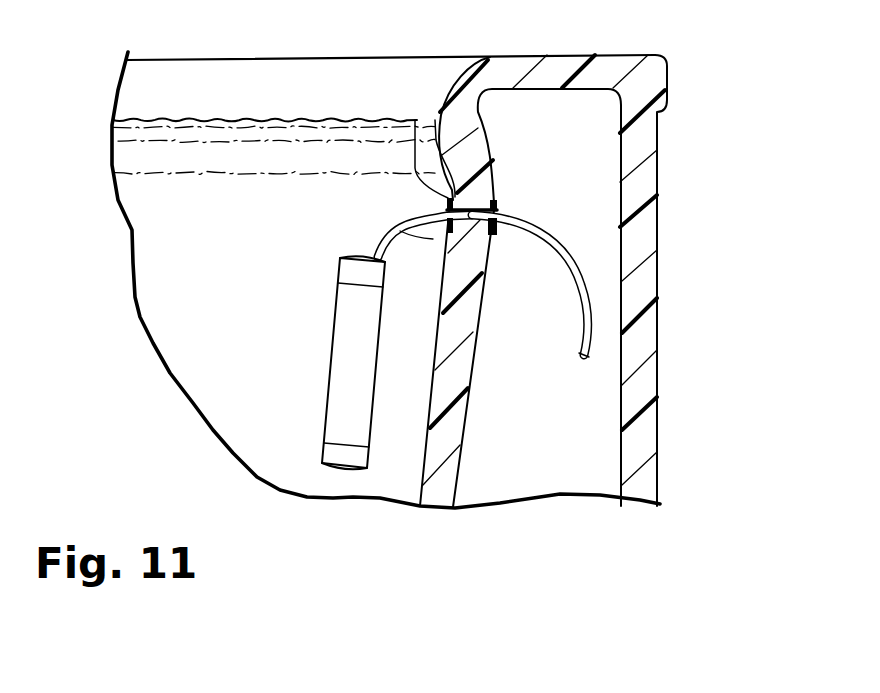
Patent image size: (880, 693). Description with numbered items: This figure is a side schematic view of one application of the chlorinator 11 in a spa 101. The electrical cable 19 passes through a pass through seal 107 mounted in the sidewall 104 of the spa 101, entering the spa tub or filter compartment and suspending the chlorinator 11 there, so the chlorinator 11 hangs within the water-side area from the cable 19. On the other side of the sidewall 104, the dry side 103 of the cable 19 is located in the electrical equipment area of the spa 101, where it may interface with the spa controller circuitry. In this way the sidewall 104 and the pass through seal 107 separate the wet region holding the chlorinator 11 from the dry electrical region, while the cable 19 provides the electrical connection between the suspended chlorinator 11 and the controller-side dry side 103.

The chlorinator 11 is at (318, 330).
The electrical cable 19 is at (393, 232).
The spa 101 is at (668, 258).
The dry side 103 is at (592, 320).
The sidewall 104 is at (448, 433).
The pass through seal 107 is at (415, 120).